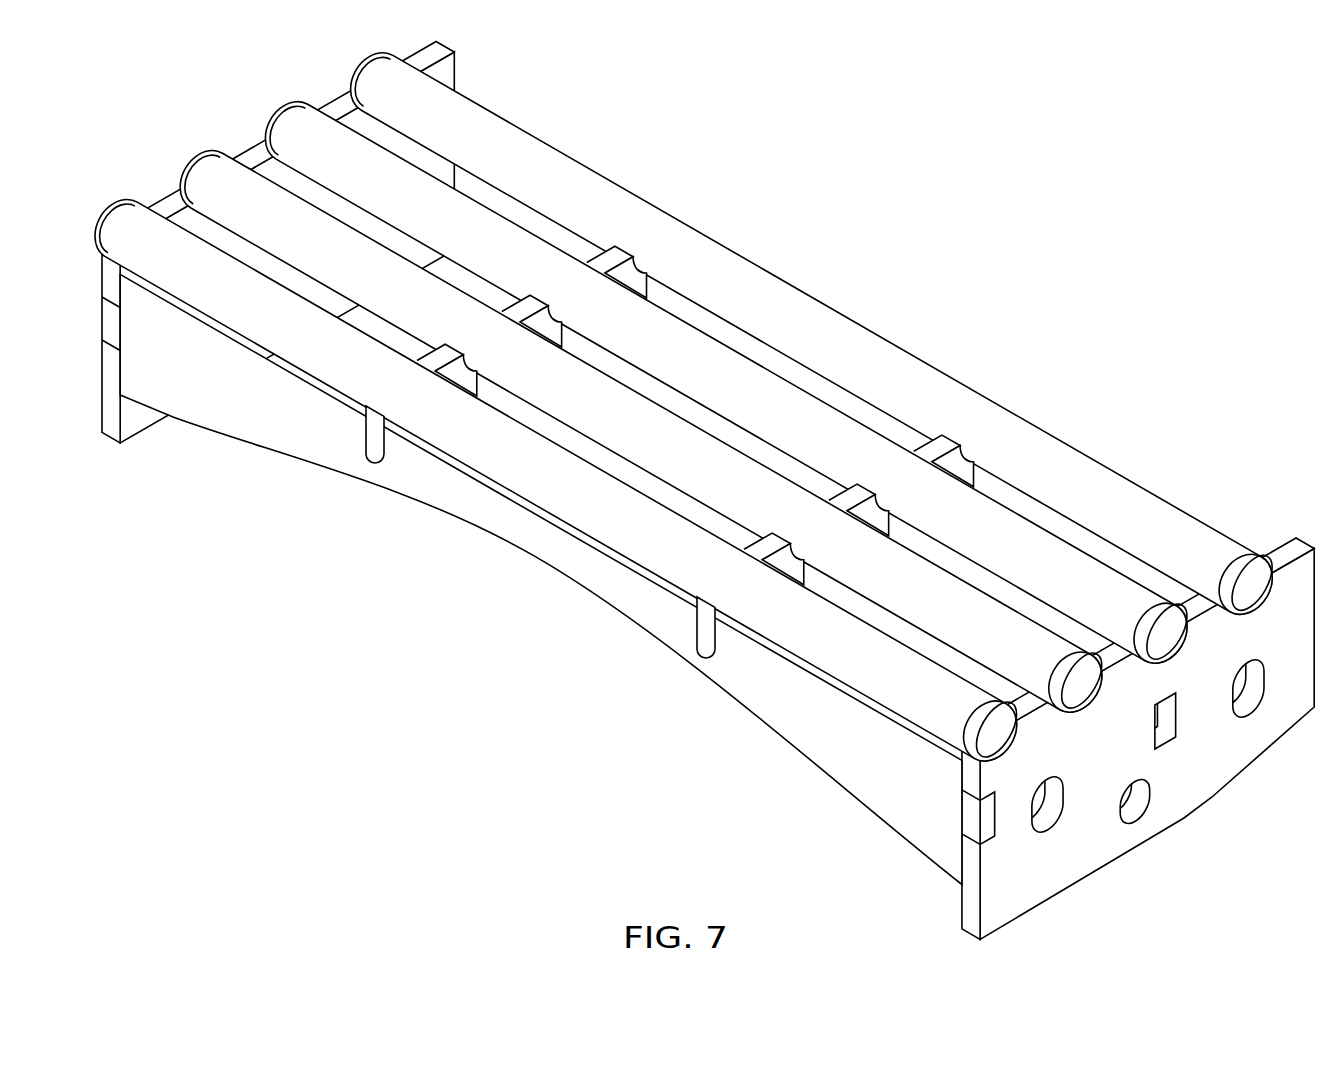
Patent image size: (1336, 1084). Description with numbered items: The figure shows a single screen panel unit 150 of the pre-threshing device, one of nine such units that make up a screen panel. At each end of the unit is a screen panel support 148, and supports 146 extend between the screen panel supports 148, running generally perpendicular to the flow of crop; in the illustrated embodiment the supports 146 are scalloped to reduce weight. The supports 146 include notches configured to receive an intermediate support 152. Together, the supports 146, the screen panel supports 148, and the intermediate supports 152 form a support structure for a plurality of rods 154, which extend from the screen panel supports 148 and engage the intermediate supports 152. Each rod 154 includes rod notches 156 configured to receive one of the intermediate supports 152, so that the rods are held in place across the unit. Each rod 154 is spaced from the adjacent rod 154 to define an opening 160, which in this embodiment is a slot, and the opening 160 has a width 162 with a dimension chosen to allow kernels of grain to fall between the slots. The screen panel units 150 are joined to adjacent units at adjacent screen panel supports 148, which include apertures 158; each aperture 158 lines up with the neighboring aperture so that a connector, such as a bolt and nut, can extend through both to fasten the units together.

The supports 146 is at (314, 200).
The screen panel supports 148 is at (112, 426).
The screen panel unit 150 is at (699, 505).
The intermediate support 152 is at (609, 256).
The rods 154 is at (1133, 513).
The rod notches 156 is at (632, 257).
The apertures 158 is at (1248, 725).
The opening 160 is at (512, 196).
The width 162 is at (656, 444).